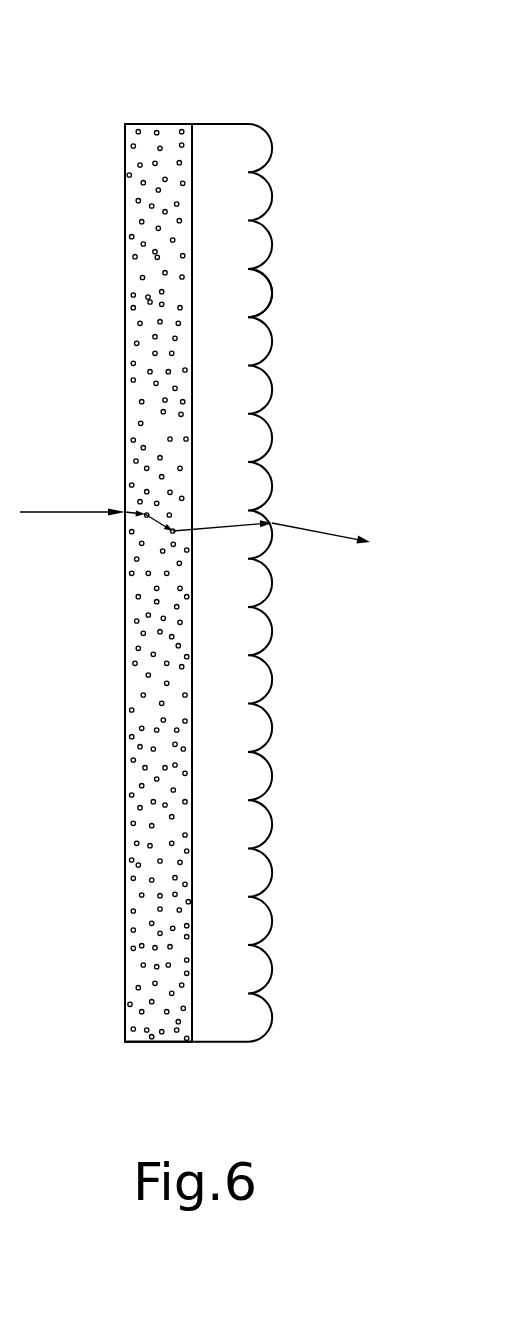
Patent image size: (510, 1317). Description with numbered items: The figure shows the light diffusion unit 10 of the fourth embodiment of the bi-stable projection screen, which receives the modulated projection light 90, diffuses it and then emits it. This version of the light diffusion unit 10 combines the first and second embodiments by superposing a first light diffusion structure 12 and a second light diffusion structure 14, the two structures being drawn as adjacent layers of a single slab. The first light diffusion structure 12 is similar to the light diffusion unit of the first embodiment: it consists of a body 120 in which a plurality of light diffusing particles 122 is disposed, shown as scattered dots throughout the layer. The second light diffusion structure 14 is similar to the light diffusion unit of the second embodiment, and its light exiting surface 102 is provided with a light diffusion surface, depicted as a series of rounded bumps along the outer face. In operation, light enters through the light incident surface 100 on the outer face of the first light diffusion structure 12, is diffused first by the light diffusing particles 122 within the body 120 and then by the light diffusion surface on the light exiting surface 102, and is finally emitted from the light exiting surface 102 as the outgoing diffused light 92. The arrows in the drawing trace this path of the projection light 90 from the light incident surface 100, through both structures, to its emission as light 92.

The light diffusion unit 10 is at (229, 106).
The first light diffusion structure 12 is at (105, 539).
The second light diffusion structure 14 is at (238, 143).
The light incident surface 100 is at (118, 272).
The light exiting surface 102 is at (282, 290).
The projection light 90 is at (45, 512).
The exit light ray 92 is at (327, 537).
The body 120 is at (141, 683).
The light diffusing particles 122 is at (141, 634).